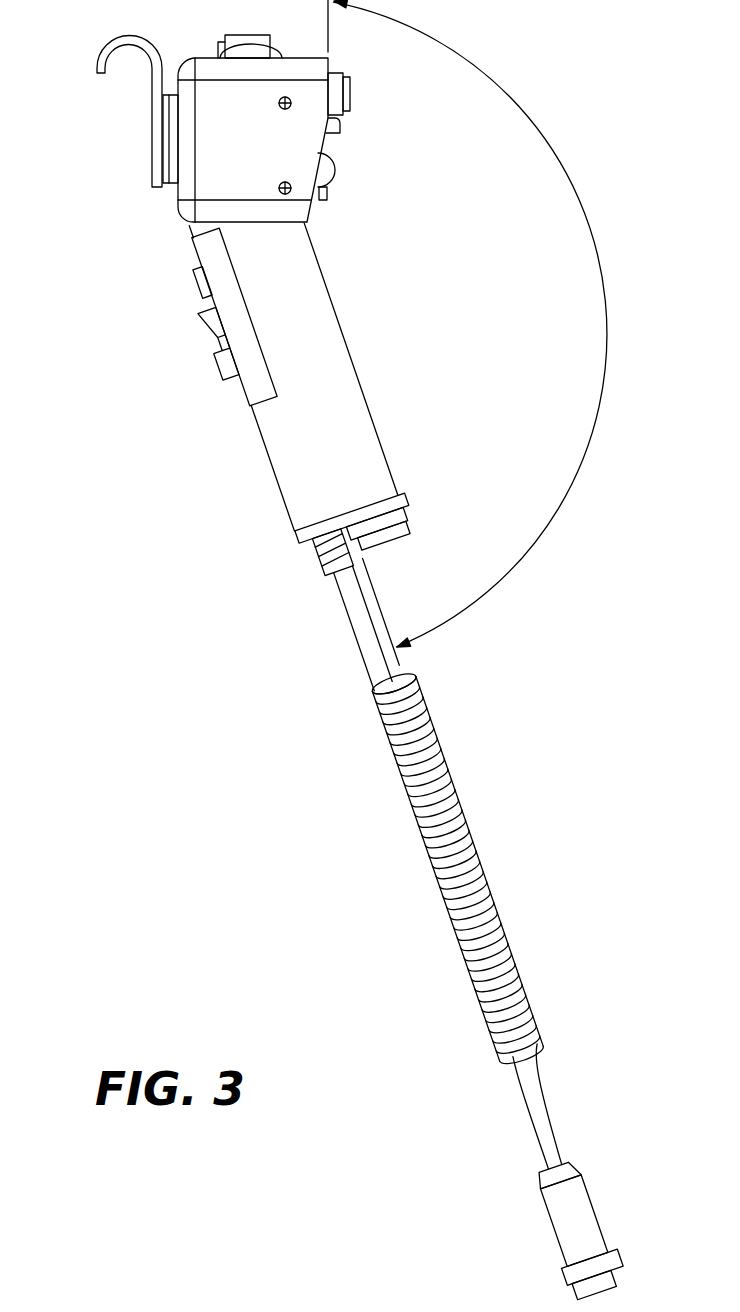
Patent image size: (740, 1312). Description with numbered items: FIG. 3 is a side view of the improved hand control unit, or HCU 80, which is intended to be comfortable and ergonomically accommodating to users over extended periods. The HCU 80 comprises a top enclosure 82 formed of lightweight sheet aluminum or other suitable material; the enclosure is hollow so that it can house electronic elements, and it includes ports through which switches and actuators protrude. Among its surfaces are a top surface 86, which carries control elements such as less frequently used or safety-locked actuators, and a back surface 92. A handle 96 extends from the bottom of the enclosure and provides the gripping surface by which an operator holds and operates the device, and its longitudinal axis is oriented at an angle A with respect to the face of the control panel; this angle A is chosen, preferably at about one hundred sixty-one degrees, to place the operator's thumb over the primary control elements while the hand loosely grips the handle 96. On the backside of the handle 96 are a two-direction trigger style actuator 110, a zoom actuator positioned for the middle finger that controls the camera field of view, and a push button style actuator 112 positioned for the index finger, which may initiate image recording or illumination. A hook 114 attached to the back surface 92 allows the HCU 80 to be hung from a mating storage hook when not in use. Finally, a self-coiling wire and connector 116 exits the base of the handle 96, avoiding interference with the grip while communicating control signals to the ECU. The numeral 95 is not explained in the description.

The HCU 80 is at (632, 62).
The top enclosure 82 is at (266, 154).
The top surface 86 is at (205, 58).
The back surface 92 is at (178, 197).
The cable connector 95 is at (415, 653).
The handle 96 is at (297, 485).
The two-direction trigger style actuator 110 is at (223, 362).
The push button style actuator 112 is at (200, 283).
The hook 114 is at (160, 93).
The wire and connector 116 is at (437, 845).
The angle A is at (607, 323).